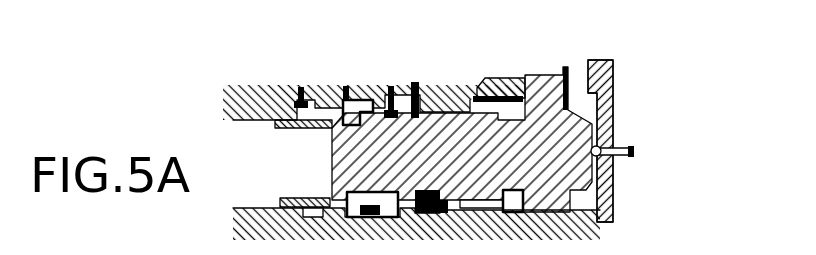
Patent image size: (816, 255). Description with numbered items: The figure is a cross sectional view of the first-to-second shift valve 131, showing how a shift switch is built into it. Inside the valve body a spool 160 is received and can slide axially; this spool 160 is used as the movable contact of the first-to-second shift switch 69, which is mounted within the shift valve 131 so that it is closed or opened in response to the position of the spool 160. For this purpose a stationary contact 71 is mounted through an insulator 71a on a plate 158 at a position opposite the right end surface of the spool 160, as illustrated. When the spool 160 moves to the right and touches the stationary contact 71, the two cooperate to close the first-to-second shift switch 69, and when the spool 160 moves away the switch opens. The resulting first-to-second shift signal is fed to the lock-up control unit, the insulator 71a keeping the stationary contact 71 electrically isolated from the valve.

The 1-2 shift valve 131 is at (560, 29).
The spool 160 is at (568, 68).
The plate 158 is at (605, 68).
The 1-2 shift switch 69 is at (720, 125).
The stationary contact 71 is at (613, 157).
The insulator 71a is at (606, 160).